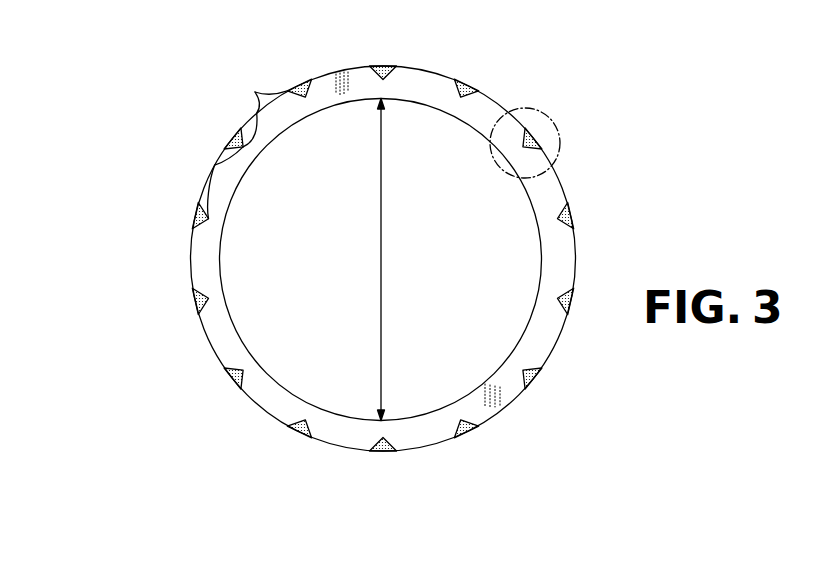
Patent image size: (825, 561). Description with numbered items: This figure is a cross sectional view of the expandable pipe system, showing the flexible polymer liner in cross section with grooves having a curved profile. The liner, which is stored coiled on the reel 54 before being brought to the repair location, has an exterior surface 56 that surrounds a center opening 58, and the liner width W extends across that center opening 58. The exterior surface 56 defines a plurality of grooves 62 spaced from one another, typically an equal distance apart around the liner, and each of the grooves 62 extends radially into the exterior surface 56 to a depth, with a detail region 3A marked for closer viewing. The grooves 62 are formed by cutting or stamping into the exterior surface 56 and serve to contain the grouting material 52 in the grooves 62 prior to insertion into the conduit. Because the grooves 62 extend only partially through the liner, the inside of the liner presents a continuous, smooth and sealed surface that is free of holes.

The grouting material 52 is at (300, 82).
The reel 54 is at (426, 72).
The exterior surface 56 is at (560, 183).
The center opening 58 is at (318, 270).
The grooves 62 is at (255, 92).
The detail region of FIG. 3A is at (560, 141).